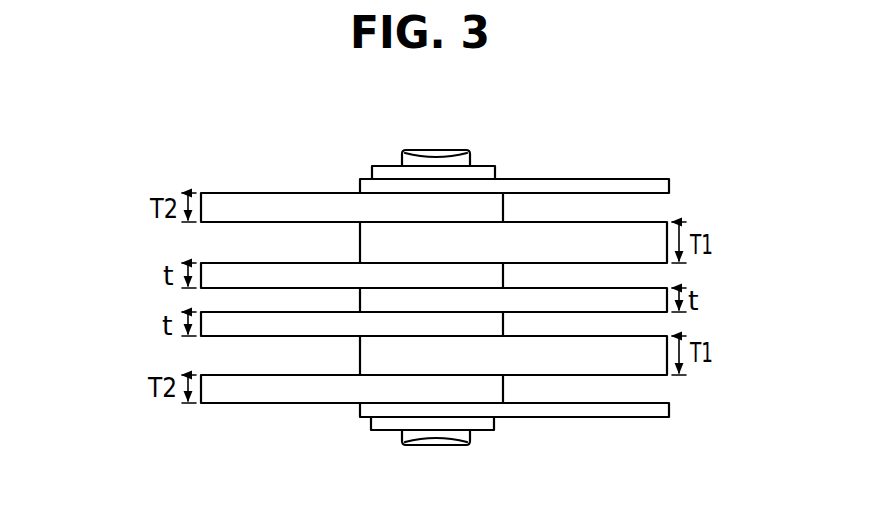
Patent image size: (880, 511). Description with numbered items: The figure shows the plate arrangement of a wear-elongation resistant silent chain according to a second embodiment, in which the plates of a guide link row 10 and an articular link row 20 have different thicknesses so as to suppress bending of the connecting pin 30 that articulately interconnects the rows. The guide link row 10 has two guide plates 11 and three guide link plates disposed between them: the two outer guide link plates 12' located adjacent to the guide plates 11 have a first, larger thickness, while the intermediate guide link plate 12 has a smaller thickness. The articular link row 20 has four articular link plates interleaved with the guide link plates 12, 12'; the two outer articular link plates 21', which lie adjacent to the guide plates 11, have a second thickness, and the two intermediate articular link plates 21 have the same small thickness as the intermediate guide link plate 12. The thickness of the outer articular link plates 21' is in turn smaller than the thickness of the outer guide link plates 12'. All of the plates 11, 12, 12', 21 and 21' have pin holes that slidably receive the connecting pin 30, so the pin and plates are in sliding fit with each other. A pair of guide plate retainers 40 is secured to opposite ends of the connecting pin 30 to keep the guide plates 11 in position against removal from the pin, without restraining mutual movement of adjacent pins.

The guide link row 10 is at (773, 173).
The guide plate 11 is at (669, 186).
The intermediate guide link plate 12 is at (570, 311).
The outer guide link plate 12' is at (572, 311).
The articular link row 20 is at (84, 218).
The intermediate articular link plate 21 is at (290, 317).
The outer articular link plate 21' is at (290, 318).
The connecting pin 30 is at (469, 151).
The guide plate retainer 40 is at (496, 169).